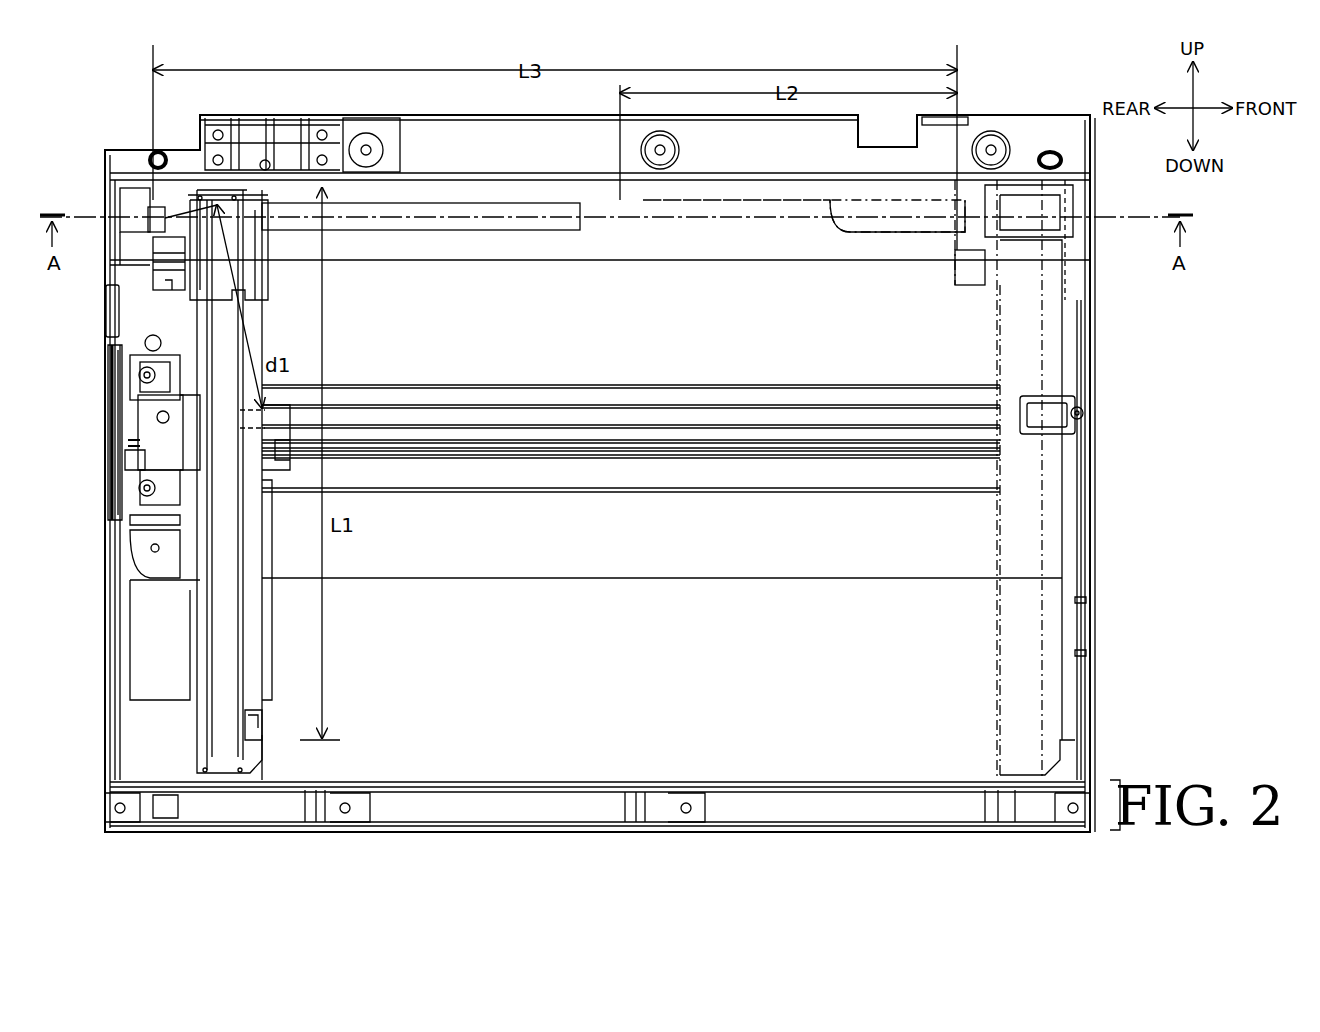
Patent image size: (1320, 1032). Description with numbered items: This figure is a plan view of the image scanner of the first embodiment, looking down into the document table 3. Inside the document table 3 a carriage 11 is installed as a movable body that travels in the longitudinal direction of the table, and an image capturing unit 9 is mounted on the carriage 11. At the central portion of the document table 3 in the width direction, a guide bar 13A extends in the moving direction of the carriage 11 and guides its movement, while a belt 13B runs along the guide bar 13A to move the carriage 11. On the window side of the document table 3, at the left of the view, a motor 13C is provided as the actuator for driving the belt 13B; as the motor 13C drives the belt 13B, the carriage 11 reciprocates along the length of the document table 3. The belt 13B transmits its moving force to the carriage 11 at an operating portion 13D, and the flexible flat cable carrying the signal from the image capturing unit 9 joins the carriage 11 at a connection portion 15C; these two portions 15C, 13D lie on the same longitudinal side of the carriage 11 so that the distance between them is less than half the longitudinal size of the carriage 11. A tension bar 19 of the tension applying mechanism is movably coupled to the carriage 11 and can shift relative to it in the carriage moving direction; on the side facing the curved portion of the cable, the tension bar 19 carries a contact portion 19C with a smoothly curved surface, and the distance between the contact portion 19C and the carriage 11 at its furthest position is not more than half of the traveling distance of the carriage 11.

The document table 3 is at (1098, 343).
The image capturing unit 9 is at (222, 313).
The carriage 11 is at (262, 335).
The guide bar 13A is at (975, 453).
The belt 13B is at (970, 398).
The motor 13C is at (165, 398).
The operating portion 13D is at (150, 452).
The connection portion 15C is at (172, 208).
The tension bar 19 is at (430, 205).
The contact portion 19C is at (135, 210).